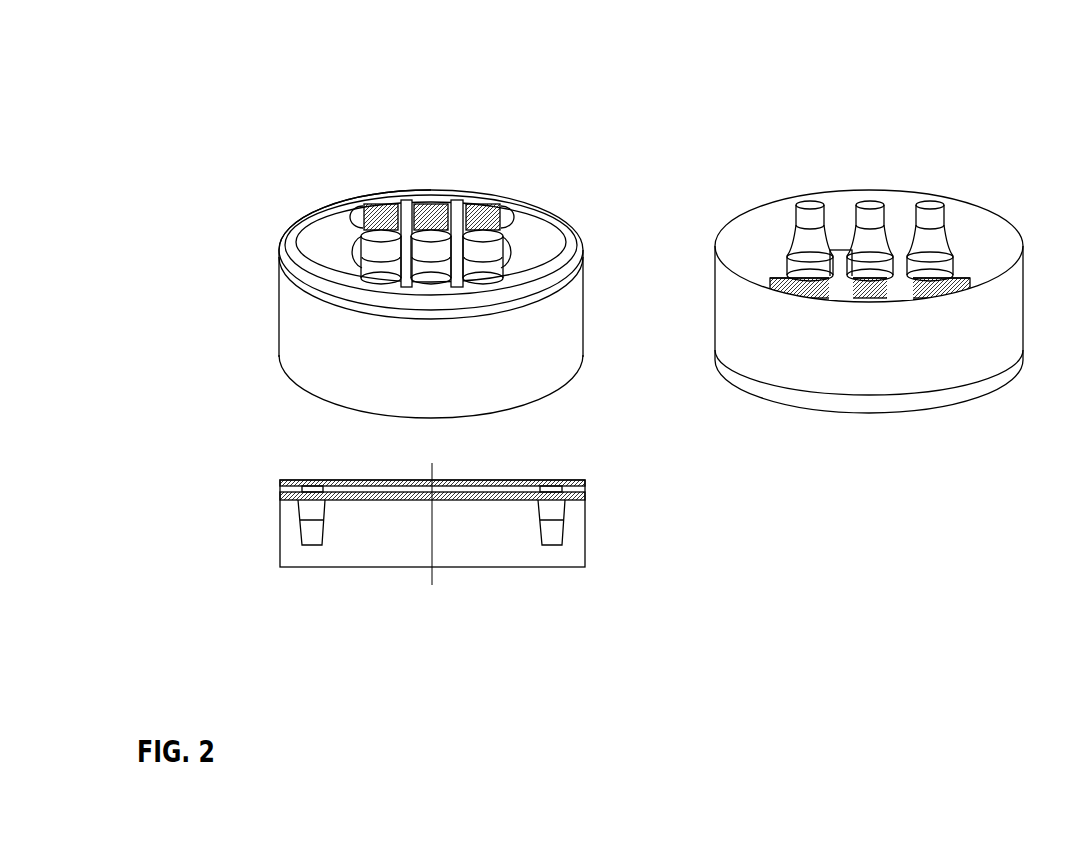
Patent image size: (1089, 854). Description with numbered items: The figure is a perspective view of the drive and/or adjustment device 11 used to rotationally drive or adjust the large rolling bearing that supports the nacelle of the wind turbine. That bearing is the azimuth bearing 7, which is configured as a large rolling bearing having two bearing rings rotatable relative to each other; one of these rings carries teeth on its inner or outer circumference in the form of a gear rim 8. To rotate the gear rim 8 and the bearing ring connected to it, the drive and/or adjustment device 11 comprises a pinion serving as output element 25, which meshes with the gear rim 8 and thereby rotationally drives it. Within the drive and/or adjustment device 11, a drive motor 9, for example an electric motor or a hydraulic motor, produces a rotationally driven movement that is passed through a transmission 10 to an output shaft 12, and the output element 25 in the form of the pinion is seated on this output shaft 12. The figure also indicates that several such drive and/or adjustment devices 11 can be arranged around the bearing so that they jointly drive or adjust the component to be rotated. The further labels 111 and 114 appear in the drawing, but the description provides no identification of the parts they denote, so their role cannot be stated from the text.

The azimuth bearing 7 is at (583, 228).
The gear rim 8 is at (533, 223).
The drive motor 9 is at (893, 200).
The transmission 10 is at (315, 267).
The drive and/or adjustment device 11 is at (298, 218).
The output shaft 12 is at (343, 204).
The output element 25 is at (430, 188).
The side wall of lid 111 is at (993, 207).
The bottle 114 is at (790, 225).